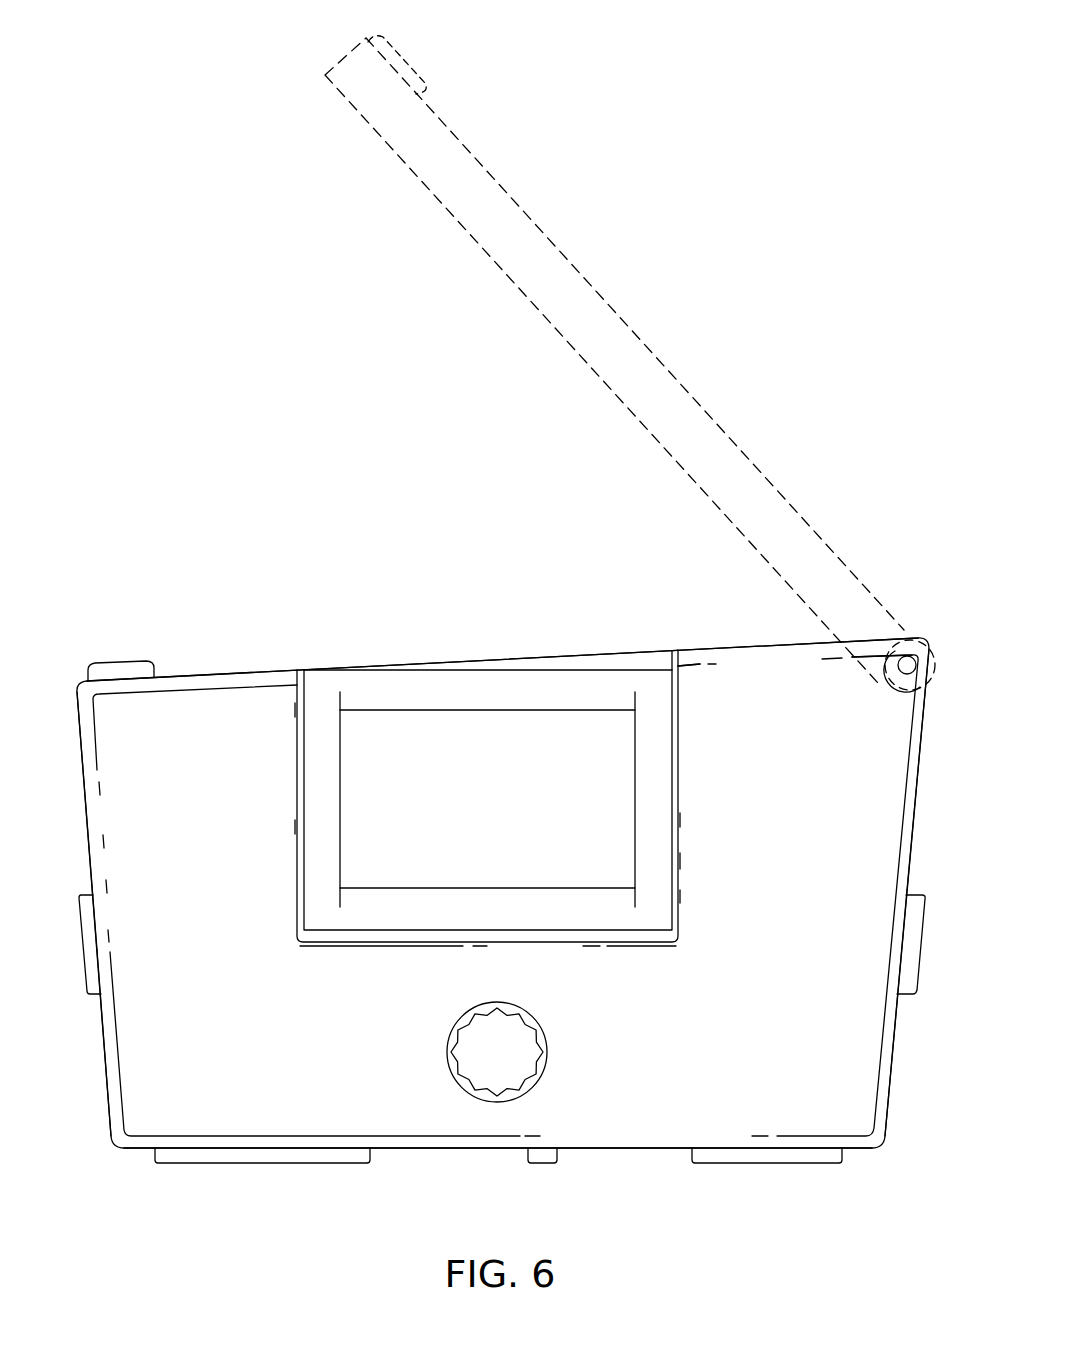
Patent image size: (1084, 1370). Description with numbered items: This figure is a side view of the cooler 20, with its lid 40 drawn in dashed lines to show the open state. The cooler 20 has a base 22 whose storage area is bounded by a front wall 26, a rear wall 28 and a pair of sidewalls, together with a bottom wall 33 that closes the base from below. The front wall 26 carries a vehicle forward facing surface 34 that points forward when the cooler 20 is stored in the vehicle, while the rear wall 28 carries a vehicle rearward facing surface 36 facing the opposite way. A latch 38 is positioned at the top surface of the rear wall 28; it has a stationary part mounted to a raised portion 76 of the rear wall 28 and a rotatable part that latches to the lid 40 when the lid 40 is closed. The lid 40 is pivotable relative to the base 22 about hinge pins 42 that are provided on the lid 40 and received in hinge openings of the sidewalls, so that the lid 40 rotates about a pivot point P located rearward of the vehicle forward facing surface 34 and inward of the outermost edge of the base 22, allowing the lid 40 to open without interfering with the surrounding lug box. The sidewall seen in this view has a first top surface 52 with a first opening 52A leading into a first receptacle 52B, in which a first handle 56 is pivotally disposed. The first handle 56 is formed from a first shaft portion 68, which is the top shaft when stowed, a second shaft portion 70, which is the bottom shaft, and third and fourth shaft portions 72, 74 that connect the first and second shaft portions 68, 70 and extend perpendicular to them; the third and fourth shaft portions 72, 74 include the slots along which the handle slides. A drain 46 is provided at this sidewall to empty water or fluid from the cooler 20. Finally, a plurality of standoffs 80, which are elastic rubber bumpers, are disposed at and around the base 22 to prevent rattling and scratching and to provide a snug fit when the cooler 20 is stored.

The cooler 20 is at (690, 167).
The base 22 is at (314, 566).
The front wall 26 is at (923, 727).
The rear wall 28 is at (84, 733).
The bottom wall 33 is at (438, 1142).
The vehicle forward facing surface 34 is at (923, 813).
The vehicle rearward facing surface 36 is at (84, 823).
The latch 38 is at (401, 46).
The lid 40 is at (672, 366).
The hinge pins 42 is at (910, 626).
The drain 46 is at (577, 1023).
The first top surface 52 is at (224, 680).
The first opening 52A is at (672, 663).
The first receptacle 52B is at (553, 766).
The first handle 56 is at (440, 653).
The first shaft portion 68 is at (492, 694).
The second shaft portion 70 is at (652, 825).
The third shaft portion 72 is at (320, 793).
The fourth shaft portion 74 is at (440, 906).
The raised portion 76 is at (115, 661).
The standoffs 80 is at (87, 958).
The pivot point P is at (882, 685).